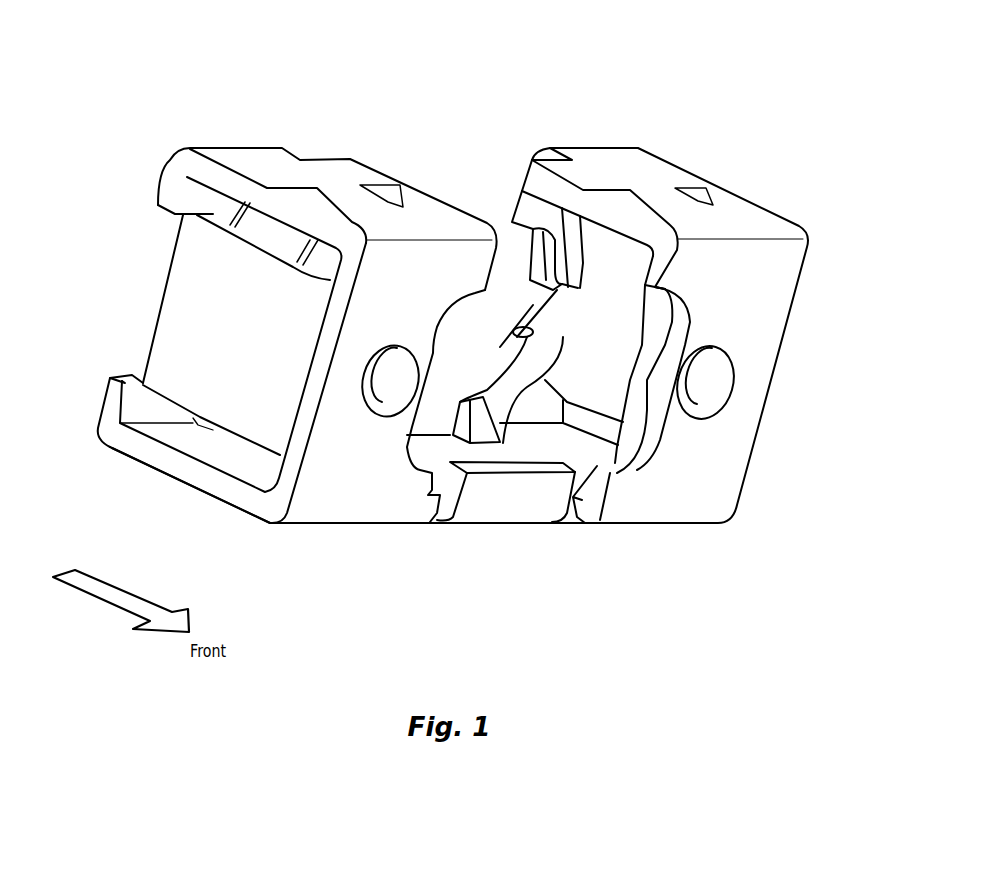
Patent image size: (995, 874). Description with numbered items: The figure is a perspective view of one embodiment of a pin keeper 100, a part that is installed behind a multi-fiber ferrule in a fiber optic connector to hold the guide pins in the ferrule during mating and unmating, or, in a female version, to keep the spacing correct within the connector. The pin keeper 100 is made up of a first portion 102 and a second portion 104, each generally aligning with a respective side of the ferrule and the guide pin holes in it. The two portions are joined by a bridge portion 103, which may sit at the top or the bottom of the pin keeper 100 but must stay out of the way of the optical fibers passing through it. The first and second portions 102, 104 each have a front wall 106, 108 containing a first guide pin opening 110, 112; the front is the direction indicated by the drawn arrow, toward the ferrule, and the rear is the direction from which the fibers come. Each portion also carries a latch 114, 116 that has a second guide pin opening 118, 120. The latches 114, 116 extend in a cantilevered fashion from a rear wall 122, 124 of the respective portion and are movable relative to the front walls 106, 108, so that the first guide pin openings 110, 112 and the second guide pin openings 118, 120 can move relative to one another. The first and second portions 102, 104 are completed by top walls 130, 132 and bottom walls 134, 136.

The pin keeper 100 is at (844, 108).
The first portion 102 is at (760, 206).
The bridge portion 103 is at (500, 527).
The second portion 104 is at (160, 192).
The front wall 106 is at (752, 458).
The front wall 108 is at (318, 527).
The first guide pin opening 110 is at (703, 420).
The first guide pin opening 112 is at (382, 418).
The latch 114 is at (640, 370).
The latch 116 is at (210, 315).
The second guide pin opening 118 is at (703, 399).
The second guide pin opening 120 is at (377, 354).
The rear wall 122 is at (520, 183).
The rear wall 124 is at (97, 397).
The top wall 130 is at (672, 162).
The top wall 132 is at (248, 162).
The bottom wall 134 is at (541, 450).
The bottom wall 136 is at (166, 483).